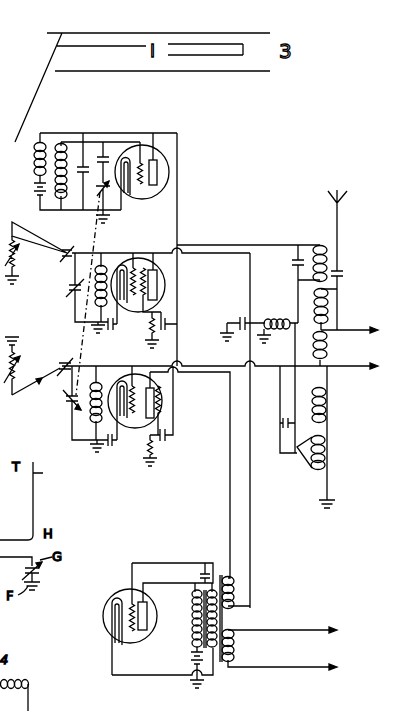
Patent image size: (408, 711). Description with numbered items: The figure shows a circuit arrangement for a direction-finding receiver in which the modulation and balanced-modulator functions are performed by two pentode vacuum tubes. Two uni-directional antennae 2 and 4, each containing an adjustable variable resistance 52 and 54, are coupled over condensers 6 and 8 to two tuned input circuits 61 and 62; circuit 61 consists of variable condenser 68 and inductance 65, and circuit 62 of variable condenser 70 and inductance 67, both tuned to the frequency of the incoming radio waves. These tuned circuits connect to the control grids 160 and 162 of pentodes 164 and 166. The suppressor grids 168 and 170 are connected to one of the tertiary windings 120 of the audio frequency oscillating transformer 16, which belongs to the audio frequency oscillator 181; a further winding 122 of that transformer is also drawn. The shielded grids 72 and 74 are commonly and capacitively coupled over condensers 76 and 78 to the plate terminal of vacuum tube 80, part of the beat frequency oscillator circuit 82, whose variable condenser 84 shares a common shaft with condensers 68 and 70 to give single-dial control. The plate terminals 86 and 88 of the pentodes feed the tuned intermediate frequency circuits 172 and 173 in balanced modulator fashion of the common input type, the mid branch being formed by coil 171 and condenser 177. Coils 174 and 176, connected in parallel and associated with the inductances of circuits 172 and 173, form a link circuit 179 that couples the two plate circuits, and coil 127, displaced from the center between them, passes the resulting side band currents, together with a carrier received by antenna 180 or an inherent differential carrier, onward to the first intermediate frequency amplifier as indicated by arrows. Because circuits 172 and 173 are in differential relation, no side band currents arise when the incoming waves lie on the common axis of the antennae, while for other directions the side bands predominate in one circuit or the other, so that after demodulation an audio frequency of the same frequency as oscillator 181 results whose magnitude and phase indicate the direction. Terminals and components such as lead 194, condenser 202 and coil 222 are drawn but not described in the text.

The uni-directional antenna 2 is at (25, 229).
The uni-directional antenna 4 is at (13, 394).
The condenser 6 is at (67, 250).
The condenser 8 is at (64, 363).
The audio frequency oscillating transformer 16 is at (203, 656).
The variable resistance 52 is at (15, 258).
The variable resistance 54 is at (16, 363).
The tuned input circuit 61 is at (82, 268).
The tuned input circuit 62 is at (88, 383).
The inductance 65 is at (103, 264).
The inductance 67 is at (129, 380).
The variable condenser 68 is at (72, 291).
The variable condenser 70 is at (70, 398).
The shielded grid 72 is at (152, 310).
The shielded grid 74 is at (160, 426).
The condenser 76 is at (166, 326).
The condenser 78 is at (167, 442).
The vacuum tube 80 is at (168, 186).
The beat frequency oscillator circuit 82 is at (88, 152).
The variable condenser 84 is at (104, 194).
The plate terminal 86 is at (152, 293).
The plate terminal 88 is at (161, 408).
The tertiary winding 120 is at (238, 592).
The transformer winding 122 is at (236, 646).
The coil 127 is at (330, 346).
The control grid 160 is at (142, 253).
The control grid 162 is at (133, 366).
The pentode 164 is at (158, 283).
The pentode 166 is at (156, 396).
The suppressor grid 168 is at (114, 326).
The suppressor grid 170 is at (157, 373).
The coil 171 is at (268, 318).
The tuned intermediate frequency circuit 172 is at (324, 238).
The tuned intermediate frequency circuit 173 is at (268, 450).
The inductive coupling coil 174 is at (330, 306).
The inductive coupling coil 176 is at (330, 411).
The condenser 177 is at (243, 316).
The link circuit 179 is at (340, 298).
The antenna 180 is at (340, 246).
The audio frequency oscillator 181 is at (170, 676).
The lead 194 is at (35, 501).
The variable condenser 202 is at (40, 573).
The coil 222 is at (26, 681).